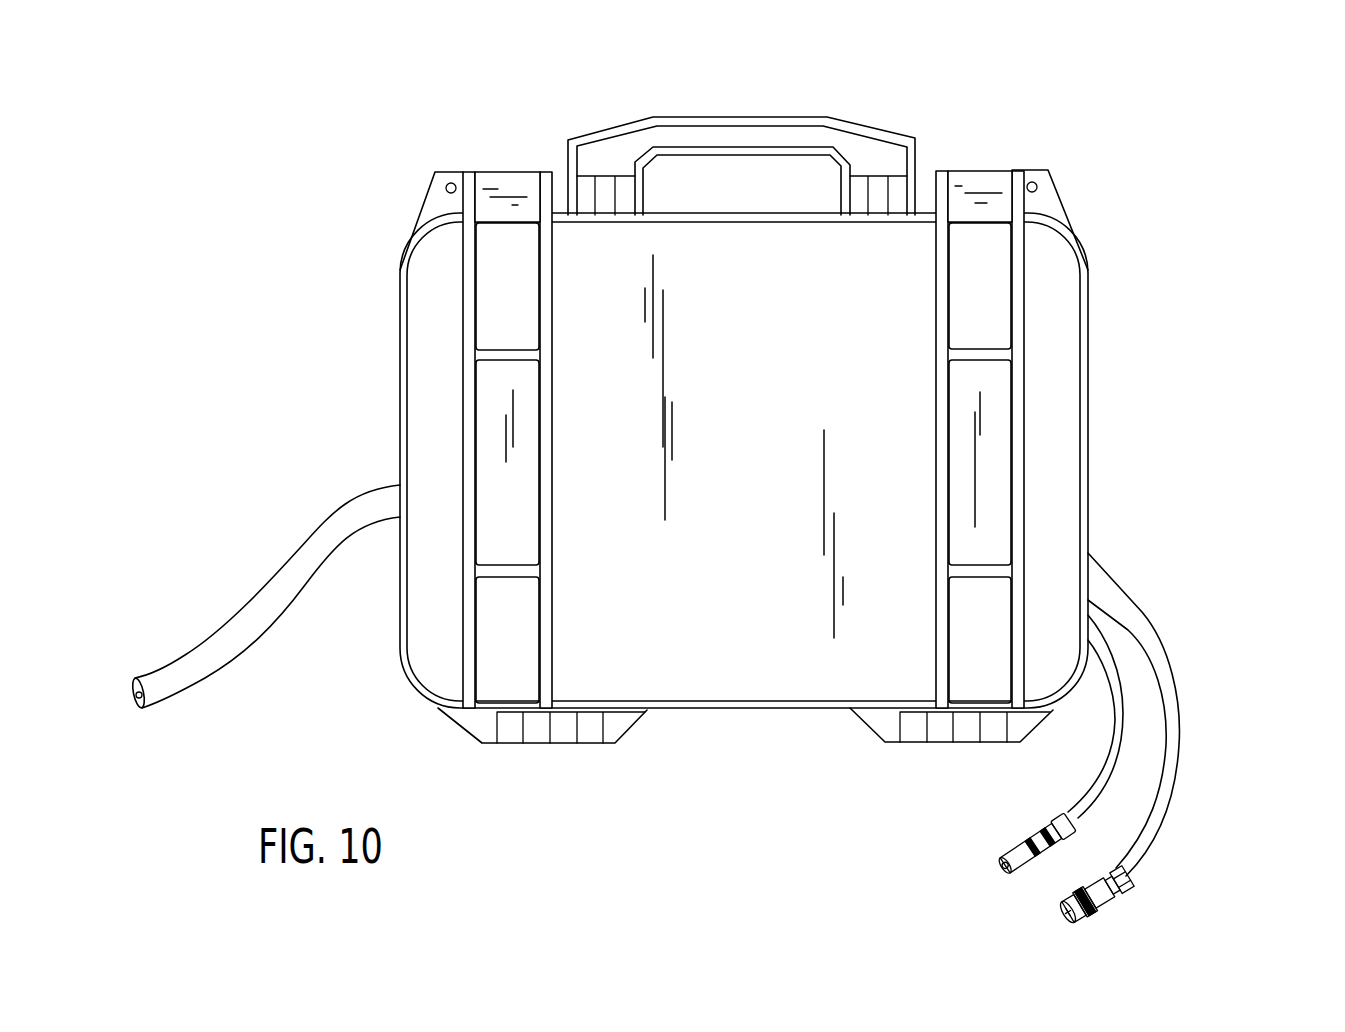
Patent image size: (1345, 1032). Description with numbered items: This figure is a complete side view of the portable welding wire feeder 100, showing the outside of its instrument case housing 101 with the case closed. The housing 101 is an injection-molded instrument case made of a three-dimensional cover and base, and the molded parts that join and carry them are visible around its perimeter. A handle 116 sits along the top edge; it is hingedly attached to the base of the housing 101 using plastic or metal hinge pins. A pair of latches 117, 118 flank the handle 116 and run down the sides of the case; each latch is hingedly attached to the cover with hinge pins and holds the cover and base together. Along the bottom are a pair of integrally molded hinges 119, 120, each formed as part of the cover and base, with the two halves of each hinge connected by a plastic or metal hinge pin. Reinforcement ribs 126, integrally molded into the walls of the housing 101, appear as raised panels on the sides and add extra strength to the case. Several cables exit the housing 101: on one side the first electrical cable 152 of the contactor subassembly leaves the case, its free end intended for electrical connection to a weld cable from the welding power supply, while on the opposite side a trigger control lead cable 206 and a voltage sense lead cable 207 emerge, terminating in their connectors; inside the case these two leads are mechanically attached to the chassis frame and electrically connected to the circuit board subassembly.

The portable welding wire feeder 100 is at (1206, 202).
The instrument case housing 101 is at (1088, 460).
The handle 116 is at (750, 133).
The latch 117 is at (503, 180).
The latch 118 is at (973, 178).
The hinge 119 is at (562, 727).
The hinge 120 is at (965, 730).
The reinforcement ribs 126 is at (545, 460).
The first electrical cable 152 is at (292, 558).
The trigger control lead cable 206 is at (1103, 908).
The voltage sense lead cable 207 is at (1052, 837).